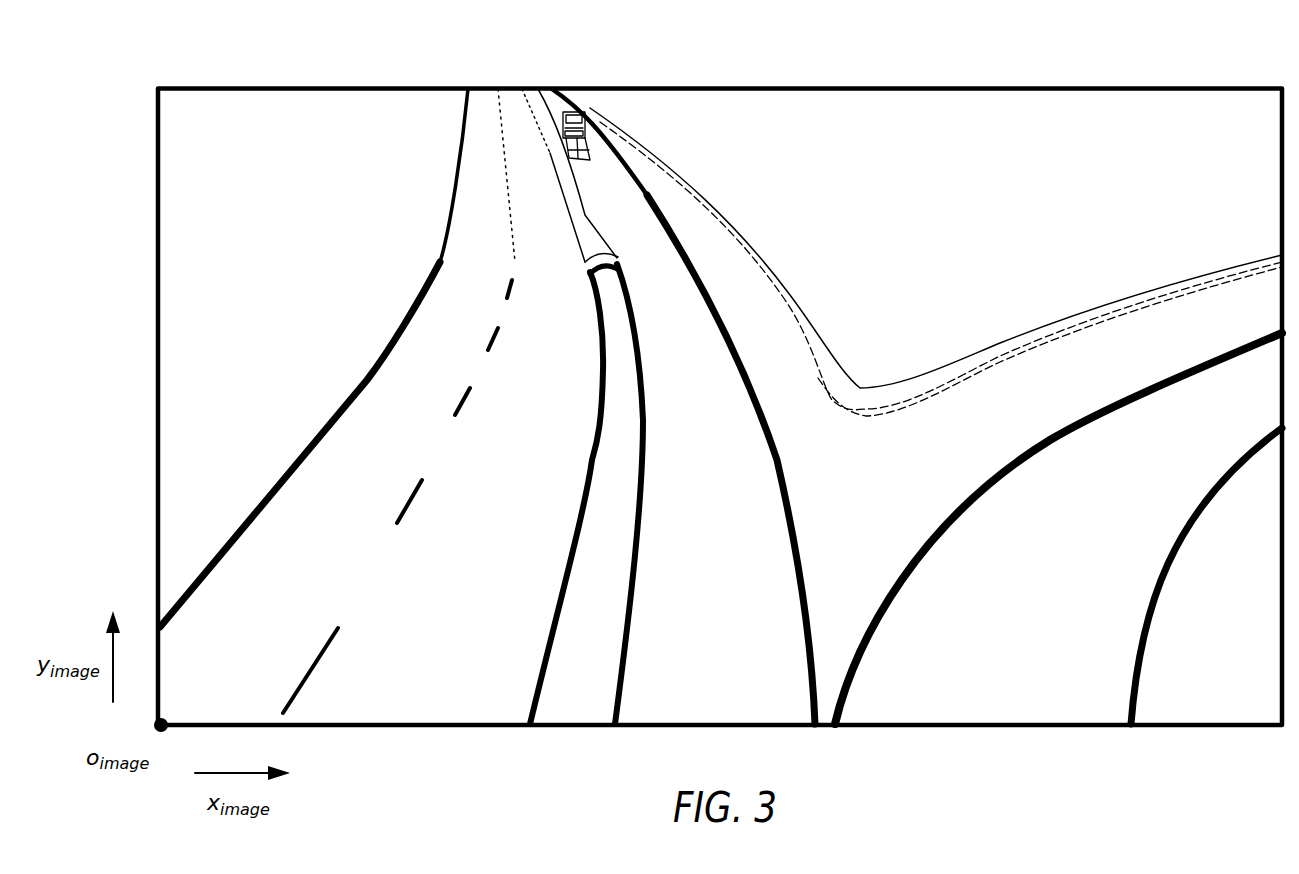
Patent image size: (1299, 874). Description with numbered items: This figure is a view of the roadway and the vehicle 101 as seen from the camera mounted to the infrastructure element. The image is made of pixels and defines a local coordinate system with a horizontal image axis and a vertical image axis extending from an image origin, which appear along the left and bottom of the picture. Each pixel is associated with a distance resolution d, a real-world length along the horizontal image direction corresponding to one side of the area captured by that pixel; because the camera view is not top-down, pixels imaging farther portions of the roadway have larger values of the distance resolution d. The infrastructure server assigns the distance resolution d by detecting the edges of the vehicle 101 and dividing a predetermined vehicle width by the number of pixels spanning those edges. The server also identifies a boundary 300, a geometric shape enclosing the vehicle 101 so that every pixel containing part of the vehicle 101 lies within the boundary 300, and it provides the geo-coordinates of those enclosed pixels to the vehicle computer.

The boundary 300 is at (553, 108).
The vehicle 101 is at (577, 113).
The distance resolution d is at (580, 160).